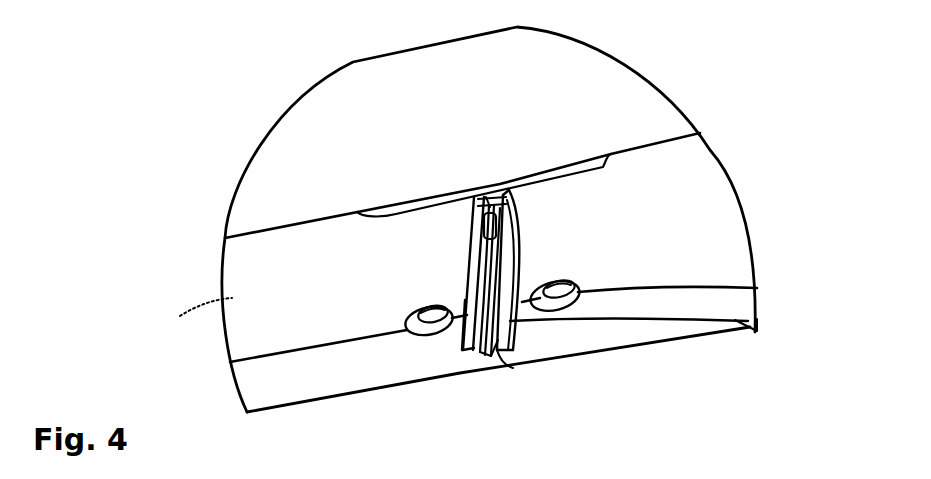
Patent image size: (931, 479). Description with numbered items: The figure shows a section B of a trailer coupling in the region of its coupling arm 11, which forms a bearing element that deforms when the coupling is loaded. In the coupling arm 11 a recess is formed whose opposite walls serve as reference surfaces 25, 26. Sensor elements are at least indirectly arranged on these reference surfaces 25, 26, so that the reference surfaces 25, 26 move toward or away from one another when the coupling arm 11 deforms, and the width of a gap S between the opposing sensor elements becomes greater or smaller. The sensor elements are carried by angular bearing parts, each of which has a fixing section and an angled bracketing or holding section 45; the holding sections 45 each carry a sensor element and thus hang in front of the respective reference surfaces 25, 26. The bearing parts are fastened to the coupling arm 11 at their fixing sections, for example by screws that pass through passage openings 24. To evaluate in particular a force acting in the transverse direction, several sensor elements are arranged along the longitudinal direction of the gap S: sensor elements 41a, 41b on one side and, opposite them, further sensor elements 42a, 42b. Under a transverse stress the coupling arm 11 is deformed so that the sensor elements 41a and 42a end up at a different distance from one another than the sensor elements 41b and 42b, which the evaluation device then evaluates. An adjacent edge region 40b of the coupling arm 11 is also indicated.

The coupling arm 11 is at (705, 175).
The passage openings 24 is at (418, 310).
The reference surface 25 is at (485, 194).
The reference surface 26 is at (505, 197).
The housing part edge 40b is at (514, 304).
The sensor element 41a is at (463, 343).
The sensor element 41b is at (480, 250).
The sensor element 42a is at (498, 340).
The sensor element 42b is at (490, 197).
The holding section 45 is at (513, 270).
The gap S is at (487, 358).
The section B is at (197, 322).